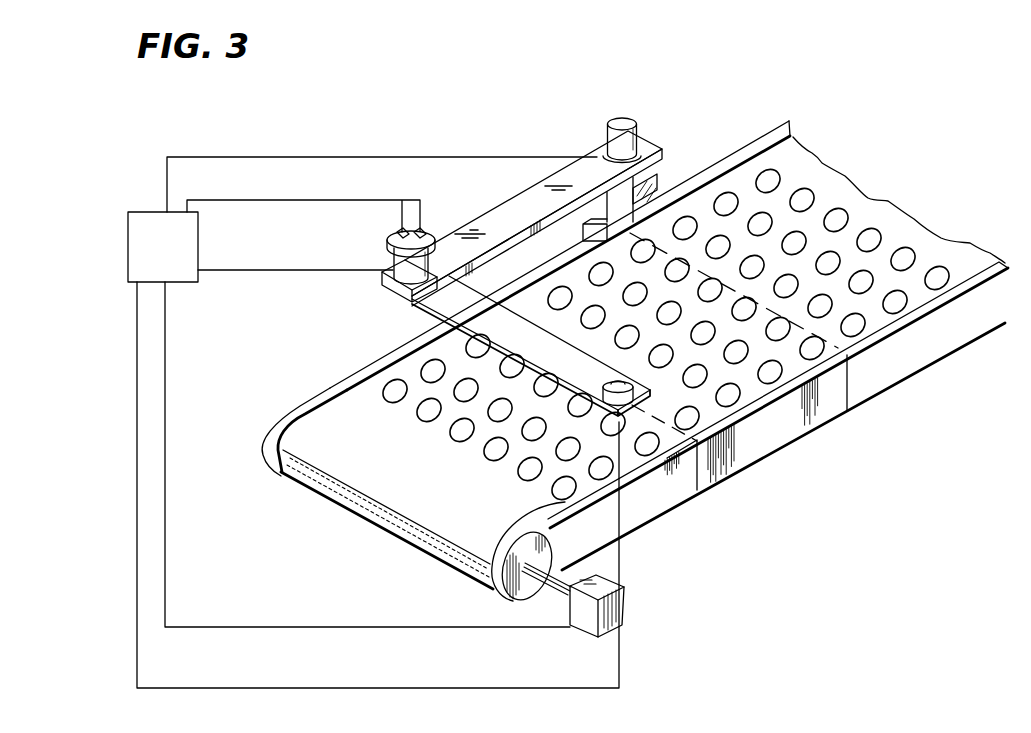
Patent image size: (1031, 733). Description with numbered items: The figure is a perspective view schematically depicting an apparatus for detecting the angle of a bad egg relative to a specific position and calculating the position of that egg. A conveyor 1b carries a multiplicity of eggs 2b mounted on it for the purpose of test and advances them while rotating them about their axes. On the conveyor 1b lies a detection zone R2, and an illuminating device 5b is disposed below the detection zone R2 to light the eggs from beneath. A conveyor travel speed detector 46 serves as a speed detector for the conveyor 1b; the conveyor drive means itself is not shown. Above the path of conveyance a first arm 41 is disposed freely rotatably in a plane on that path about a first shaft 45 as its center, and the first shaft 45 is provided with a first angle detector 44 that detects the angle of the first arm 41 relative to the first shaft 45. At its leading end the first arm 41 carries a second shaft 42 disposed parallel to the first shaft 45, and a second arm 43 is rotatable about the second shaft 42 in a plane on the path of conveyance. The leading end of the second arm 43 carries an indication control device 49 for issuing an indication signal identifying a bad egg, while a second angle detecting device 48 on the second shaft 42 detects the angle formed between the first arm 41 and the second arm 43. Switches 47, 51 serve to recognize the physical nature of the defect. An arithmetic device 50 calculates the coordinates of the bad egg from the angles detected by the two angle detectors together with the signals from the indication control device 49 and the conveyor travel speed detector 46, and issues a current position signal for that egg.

The conveyor 1b is at (960, 274).
The eggs 2b is at (853, 349).
The illuminating device 5b is at (765, 455).
The detection zone R2 is at (760, 393).
The first arm 41 is at (523, 207).
The second shaft 42 is at (404, 272).
The second arm 43 is at (440, 310).
The first angle detector 44 is at (597, 152).
The first shaft 45 is at (627, 122).
The conveyor travel speed detector 46 is at (628, 600).
The switch 47 is at (392, 237).
The second angle detecting device 48 is at (384, 266).
The indication control device 49 is at (606, 380).
The arithmetic device 50 is at (200, 233).
The switch 51 is at (424, 231).